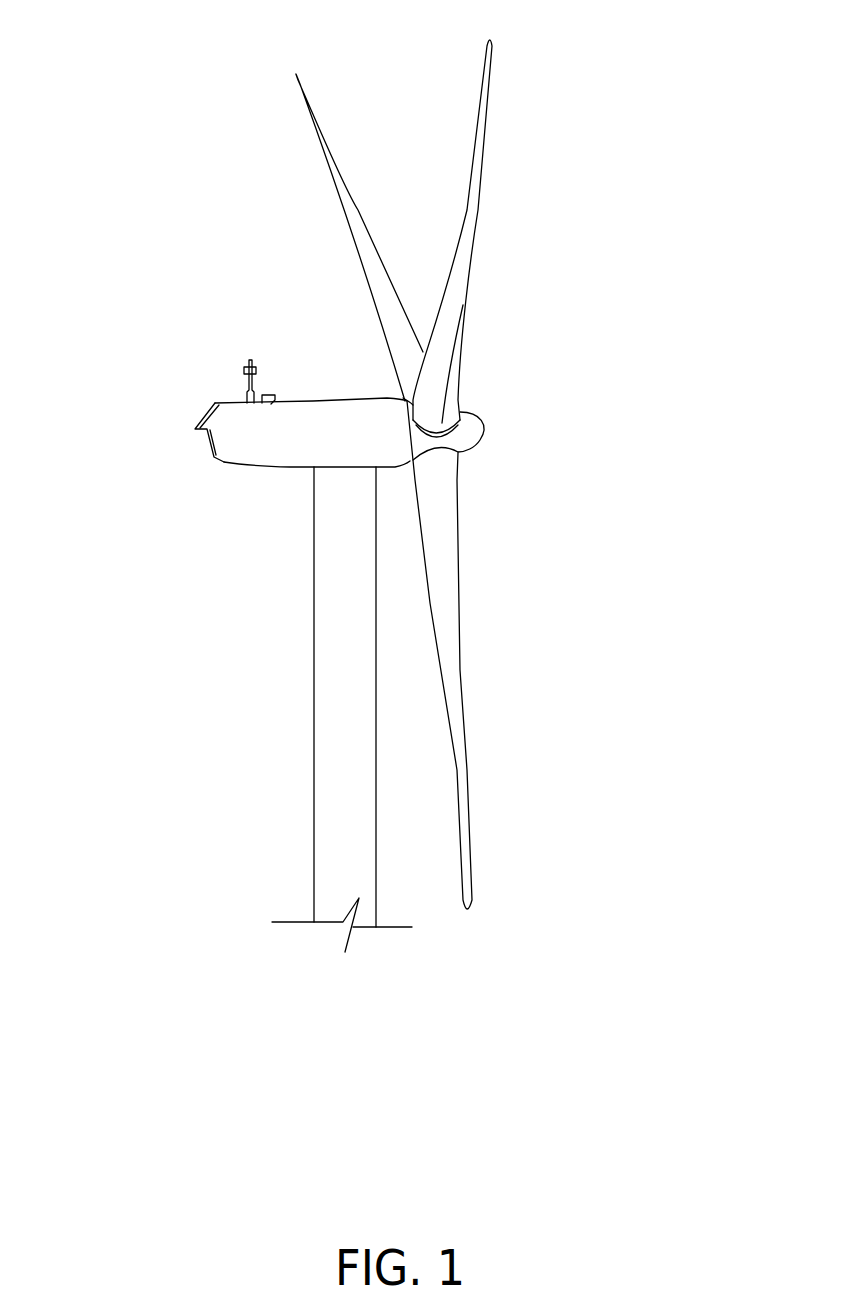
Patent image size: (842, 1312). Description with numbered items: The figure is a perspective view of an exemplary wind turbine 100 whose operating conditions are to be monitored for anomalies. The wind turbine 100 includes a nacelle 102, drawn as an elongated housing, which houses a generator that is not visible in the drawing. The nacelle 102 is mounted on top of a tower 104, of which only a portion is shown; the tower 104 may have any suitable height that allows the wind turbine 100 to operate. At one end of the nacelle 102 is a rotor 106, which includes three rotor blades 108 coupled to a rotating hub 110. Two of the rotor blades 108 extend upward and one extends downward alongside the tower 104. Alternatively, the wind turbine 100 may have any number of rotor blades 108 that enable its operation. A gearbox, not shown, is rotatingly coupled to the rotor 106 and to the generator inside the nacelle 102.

The wind turbine 100 is at (152, 60).
The nacelle 102 is at (237, 463).
The tower 104 is at (314, 778).
The rotor 106 is at (640, 170).
The rotor blades 108 is at (303, 105).
The rotating hub 110 is at (473, 420).